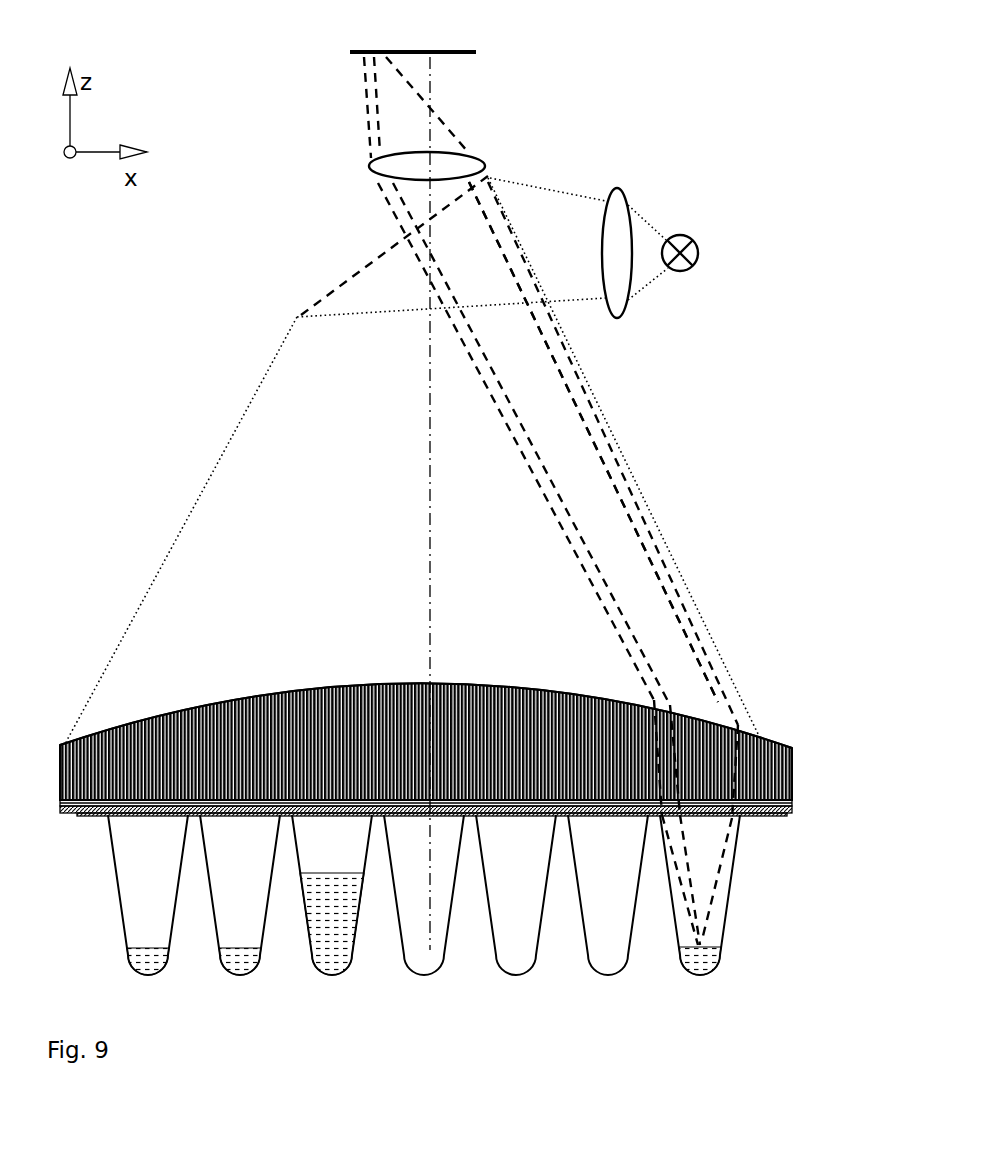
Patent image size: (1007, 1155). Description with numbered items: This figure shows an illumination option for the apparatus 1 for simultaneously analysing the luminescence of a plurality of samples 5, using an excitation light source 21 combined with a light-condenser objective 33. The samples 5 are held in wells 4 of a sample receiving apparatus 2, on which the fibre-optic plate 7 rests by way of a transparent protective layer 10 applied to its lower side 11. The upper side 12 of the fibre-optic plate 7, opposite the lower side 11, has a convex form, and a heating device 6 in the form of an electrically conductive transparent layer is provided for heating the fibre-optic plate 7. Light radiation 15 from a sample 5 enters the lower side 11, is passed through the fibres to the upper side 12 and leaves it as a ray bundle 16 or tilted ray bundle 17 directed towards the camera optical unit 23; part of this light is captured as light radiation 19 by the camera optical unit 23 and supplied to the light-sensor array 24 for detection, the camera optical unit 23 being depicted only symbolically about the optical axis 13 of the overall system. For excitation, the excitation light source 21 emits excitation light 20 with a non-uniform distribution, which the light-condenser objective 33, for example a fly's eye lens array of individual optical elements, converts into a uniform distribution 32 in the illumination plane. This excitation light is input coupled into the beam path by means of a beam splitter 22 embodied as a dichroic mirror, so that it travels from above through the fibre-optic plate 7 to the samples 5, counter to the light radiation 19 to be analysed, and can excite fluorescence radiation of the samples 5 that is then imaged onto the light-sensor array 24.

The apparatus 1 is at (745, 20).
The sample receiving apparatus 2 is at (462, 901).
The well 4 is at (708, 925).
The sample 5 is at (707, 958).
The heating device 6 is at (793, 802).
The fibre-optic plate 7 is at (793, 772).
The transparent protective layer 10 is at (778, 813).
The lower side 11 is at (780, 818).
The upper side 12 is at (775, 742).
The optical axis 13 is at (425, 515).
The light radiation 15 is at (710, 897).
The ray bundle 16 is at (707, 663).
The tilted ray bundle 17 is at (770, 630).
The light radiation 19 is at (553, 370).
The excitation light 20 is at (647, 223).
The excitation light source 21 is at (703, 247).
The beam splitter 22 is at (362, 268).
The camera optical unit 23 is at (488, 174).
The light-sensor array 24 is at (480, 52).
The uniform distribution 32 is at (557, 192).
The light-condenser objective 33 is at (620, 188).